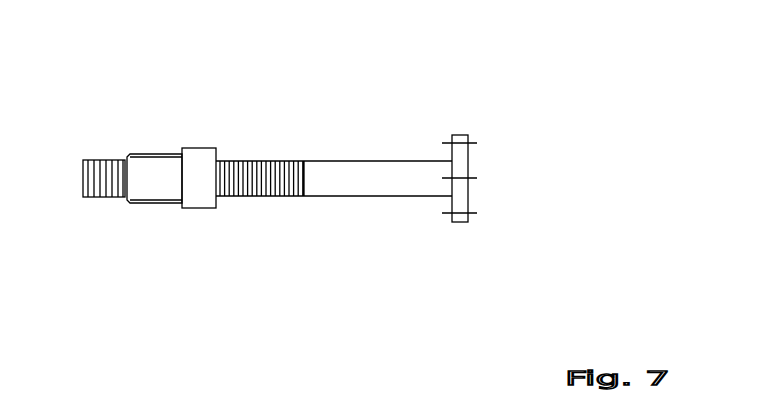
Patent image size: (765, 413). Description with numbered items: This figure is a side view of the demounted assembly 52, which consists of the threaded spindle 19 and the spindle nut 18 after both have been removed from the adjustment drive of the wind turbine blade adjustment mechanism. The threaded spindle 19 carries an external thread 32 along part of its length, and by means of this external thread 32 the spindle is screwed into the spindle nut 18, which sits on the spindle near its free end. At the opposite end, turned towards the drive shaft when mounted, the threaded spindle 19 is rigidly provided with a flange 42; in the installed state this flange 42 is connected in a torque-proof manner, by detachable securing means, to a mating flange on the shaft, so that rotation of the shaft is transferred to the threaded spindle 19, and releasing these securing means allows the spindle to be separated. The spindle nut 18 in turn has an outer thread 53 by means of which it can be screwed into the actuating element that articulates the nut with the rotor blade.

The demounted assembly 52 is at (270, 74).
The spindle nut 18 is at (188, 152).
The threaded spindle 19 is at (343, 161).
The flange 42 is at (458, 138).
The external thread 32 is at (270, 190).
The outer thread of the spindle nut 53 is at (146, 204).